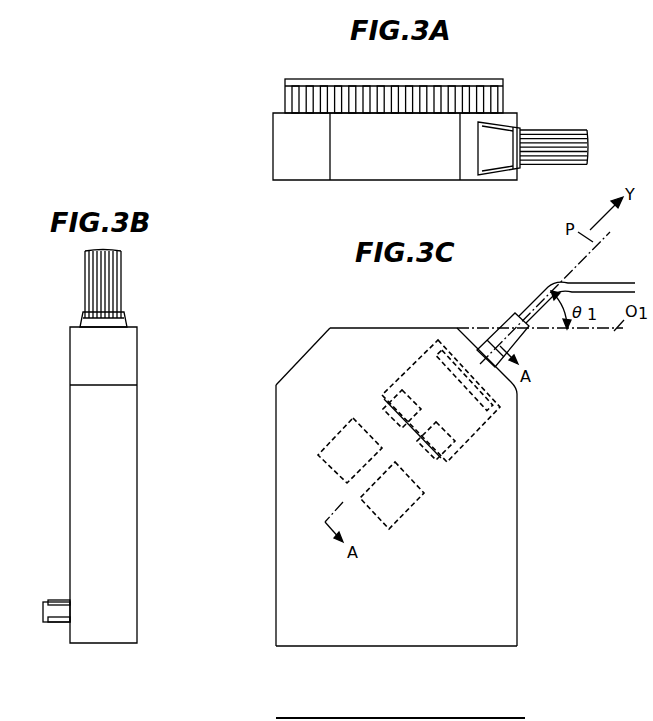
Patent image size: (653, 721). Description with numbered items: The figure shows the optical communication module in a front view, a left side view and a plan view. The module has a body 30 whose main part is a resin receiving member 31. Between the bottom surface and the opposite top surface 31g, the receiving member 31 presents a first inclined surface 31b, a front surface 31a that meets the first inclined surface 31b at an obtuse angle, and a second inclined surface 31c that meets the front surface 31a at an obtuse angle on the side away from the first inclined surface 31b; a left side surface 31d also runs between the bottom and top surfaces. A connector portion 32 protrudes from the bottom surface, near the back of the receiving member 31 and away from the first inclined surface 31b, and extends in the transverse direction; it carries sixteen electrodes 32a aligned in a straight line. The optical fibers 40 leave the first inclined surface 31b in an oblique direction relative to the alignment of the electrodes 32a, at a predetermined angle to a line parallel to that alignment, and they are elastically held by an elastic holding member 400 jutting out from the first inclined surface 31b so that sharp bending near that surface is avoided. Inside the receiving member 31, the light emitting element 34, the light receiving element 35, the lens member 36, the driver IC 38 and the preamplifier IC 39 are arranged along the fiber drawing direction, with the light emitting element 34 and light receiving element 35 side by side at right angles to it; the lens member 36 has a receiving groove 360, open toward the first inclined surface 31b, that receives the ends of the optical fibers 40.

In FIG. 3C, the body 30 is at (363, 491).
In FIG. 3C, the receiving member 31 is at (338, 482).
In FIG. 3A, the front surface 31a is at (345, 168).
In FIG. 3C, the front surface 31a is at (412, 328).
In FIG. 3A, the first inclined surface 31b is at (478, 168).
In FIG. 3C, the first inclined surface 31b is at (469, 340).
In FIG. 3A, the second inclined surface 31c is at (283, 117).
In FIG. 3B, the second inclined surface 31c is at (87, 370).
In FIG. 3C, the second inclined surface 31c is at (321, 339).
In FIG. 3B, the left side surface 31d is at (82, 543).
In FIG. 3C, the top surface 31g is at (302, 633).
In FIG. 3A, the connector portion 32 is at (421, 74).
In FIG. 3B, the connector portion 32 is at (55, 643).
In FIG. 3A, the electrodes 32a is at (482, 88).
In FIG. 3B, the electrodes 32a is at (57, 624).
In FIG. 3C, the light emitting element 34 is at (403, 412).
In FIG. 3C, the light receiving element 35 is at (449, 452).
In FIG. 3C, the lens member 36 is at (390, 370).
In FIG. 3C, the receiving groove 360 is at (506, 393).
In FIG. 3C, the driver IC 38 is at (340, 455).
In FIG. 3C, the preamplifier IC 39 is at (380, 508).
In FIG. 3A, the optical fibers 40 is at (580, 146).
In FIG. 3B, the optical fibers 40 is at (88, 282).
In FIG. 3C, the optical fibers 40 is at (618, 284).
In FIG. 3A, the elastic holding member 400 is at (492, 162).
In FIG. 3C, the elastic holding member 400 is at (498, 330).